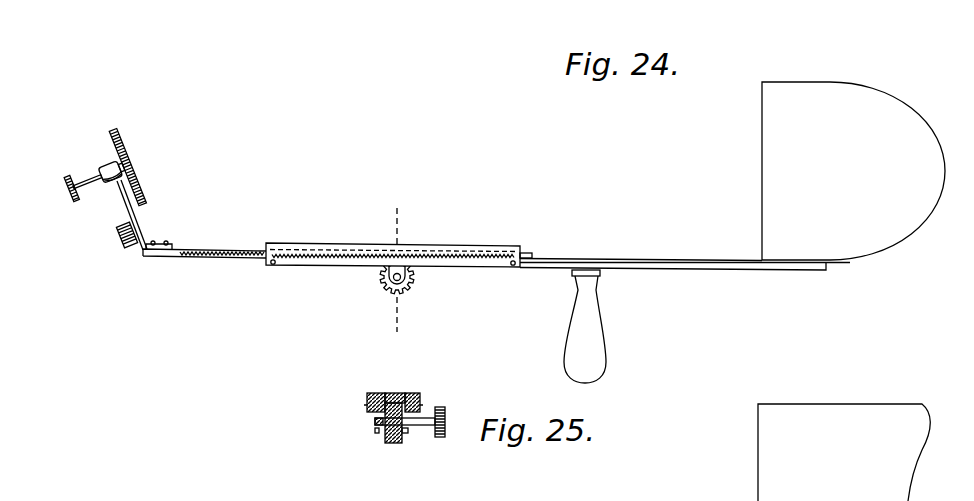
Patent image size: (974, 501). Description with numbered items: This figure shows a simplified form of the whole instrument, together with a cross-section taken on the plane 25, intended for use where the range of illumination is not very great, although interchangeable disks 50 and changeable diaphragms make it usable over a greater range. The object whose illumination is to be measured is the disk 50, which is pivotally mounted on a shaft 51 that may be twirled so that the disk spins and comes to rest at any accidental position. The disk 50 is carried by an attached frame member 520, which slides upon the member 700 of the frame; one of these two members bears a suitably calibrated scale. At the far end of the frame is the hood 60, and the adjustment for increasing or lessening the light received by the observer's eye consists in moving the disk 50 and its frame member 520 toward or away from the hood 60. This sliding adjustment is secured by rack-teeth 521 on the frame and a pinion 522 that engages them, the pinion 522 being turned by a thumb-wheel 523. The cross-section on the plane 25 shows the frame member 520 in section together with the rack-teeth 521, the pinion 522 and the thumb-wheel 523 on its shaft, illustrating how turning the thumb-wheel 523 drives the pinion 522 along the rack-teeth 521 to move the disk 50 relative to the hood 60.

In FIG. 24, the disk 50 is at (143, 192).
In FIG. 24, the shaft 51 is at (95, 196).
In FIG. 24, the frame member 520 is at (229, 249).
In FIG. 25, the frame member 520 is at (381, 384).
In FIG. 24, the rack-teeth 521 is at (263, 271).
In FIG. 25, the rack-teeth 521 is at (400, 401).
In FIG. 24, the pinion 522 is at (413, 287).
In FIG. 25, the pinion 522 is at (390, 444).
In FIG. 25, the thumb-wheel 523 is at (442, 438).
In FIG. 24, the plane 25 is at (399, 273).
In FIG. 24, the hood 60 is at (853, 171).
In FIG. 24, the frame member 700 is at (712, 273).